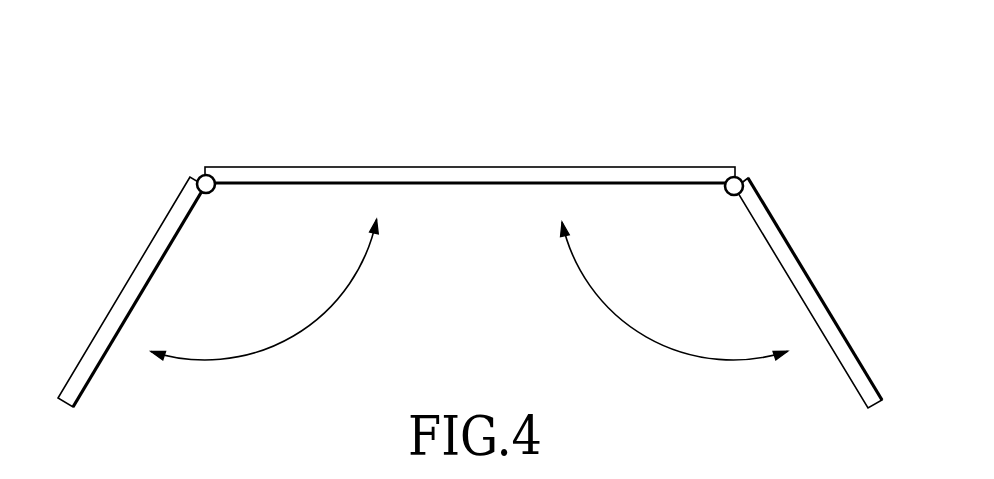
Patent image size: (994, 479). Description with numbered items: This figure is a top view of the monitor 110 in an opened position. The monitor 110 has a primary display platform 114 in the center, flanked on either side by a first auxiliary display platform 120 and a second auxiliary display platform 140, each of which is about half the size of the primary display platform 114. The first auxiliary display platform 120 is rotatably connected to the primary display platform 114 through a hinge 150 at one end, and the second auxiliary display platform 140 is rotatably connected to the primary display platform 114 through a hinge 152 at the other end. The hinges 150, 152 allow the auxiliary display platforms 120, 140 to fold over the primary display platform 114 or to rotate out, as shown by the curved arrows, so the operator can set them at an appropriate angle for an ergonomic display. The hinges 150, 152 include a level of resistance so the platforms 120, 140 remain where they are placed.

The monitor 110 is at (678, 130).
The primary display platform 114 is at (528, 172).
The first auxiliary display platform 120 is at (142, 265).
The second auxiliary display platform 140 is at (800, 262).
The hinge 150 is at (200, 178).
The hinge 152 is at (741, 180).